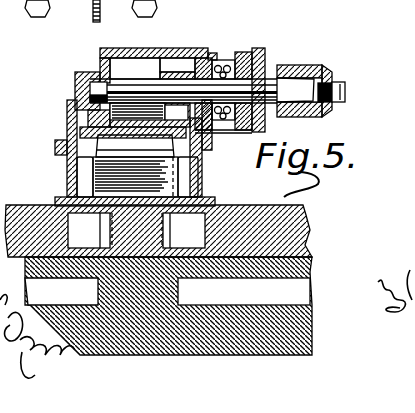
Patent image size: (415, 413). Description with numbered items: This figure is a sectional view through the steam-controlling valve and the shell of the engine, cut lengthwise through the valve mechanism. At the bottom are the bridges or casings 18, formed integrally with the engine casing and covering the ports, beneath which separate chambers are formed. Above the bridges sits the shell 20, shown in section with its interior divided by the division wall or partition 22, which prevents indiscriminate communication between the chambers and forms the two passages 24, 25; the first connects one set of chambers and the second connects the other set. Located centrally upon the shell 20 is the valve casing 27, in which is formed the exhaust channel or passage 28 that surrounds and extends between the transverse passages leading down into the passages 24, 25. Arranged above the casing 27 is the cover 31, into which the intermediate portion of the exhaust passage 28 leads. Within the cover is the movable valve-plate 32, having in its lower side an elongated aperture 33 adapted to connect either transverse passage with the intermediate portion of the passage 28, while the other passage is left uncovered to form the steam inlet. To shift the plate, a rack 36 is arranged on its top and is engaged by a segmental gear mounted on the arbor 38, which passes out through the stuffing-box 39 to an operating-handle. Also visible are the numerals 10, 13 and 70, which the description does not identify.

The bolt 10 is at (92, 8).
The threaded rod 13 is at (92, 10).
The bridges or casings 18 is at (168, 306).
The shell 20 is at (37, 205).
The division wall or partition 22 is at (137, 231).
The passage 24 is at (90, 230).
The passage 25 is at (183, 230).
The casing 27 is at (67, 126).
The exhaust channel or passage 28 is at (135, 177).
The cover 31 is at (152, 48).
The movable valve-plate 32 is at (74, 108).
The elongated aperture 33 is at (152, 140).
The rack 36 is at (205, 157).
The arbor 38 is at (183, 91).
The stuffing-box 39 is at (238, 56).
The knob 70 is at (296, 38).